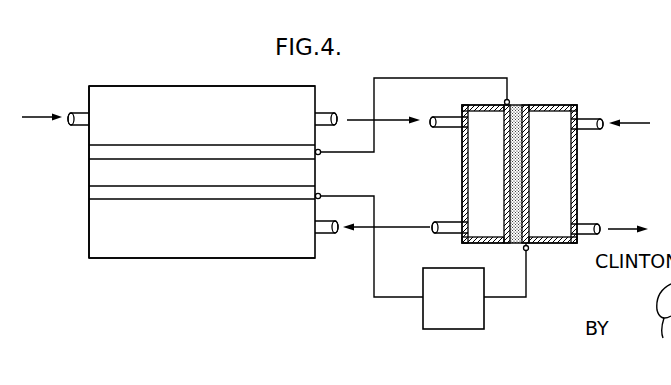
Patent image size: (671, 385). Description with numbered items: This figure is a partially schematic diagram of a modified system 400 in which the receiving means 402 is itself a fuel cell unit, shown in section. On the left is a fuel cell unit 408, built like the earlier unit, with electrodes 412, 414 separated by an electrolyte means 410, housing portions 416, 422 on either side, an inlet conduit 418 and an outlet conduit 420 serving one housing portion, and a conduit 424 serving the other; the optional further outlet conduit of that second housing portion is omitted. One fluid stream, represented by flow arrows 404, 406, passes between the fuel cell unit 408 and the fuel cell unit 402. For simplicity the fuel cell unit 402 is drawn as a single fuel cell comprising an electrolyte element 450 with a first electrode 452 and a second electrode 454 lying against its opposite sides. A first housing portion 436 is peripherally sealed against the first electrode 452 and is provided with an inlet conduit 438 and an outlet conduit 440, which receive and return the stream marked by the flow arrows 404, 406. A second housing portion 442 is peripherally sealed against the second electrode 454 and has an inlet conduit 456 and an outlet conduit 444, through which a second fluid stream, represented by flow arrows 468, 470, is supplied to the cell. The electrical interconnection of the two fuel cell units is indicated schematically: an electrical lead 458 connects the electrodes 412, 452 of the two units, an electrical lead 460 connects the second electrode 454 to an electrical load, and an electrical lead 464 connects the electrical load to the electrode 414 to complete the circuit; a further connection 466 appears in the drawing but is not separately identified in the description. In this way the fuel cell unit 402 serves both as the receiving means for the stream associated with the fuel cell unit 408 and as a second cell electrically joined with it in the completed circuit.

The system 400 is at (250, 65).
The receiving means 402 is at (569, 82).
The flow arrow 404 is at (35, 114).
The flow arrow 406 is at (404, 226).
The fuel cell unit 408 is at (142, 71).
The electrolyte means 410 is at (100, 177).
The electrode 412 is at (186, 148).
The electrode 414 is at (192, 202).
The housing portion 416 is at (197, 92).
The inlet conduit 418 is at (79, 124).
The outlet conduit 420 is at (328, 115).
The housing portion 422 is at (238, 262).
The conduit 424 is at (323, 233).
The first housing portion 436 is at (462, 191).
The inlet conduit 438 is at (447, 126).
The outlet conduit 440 is at (445, 233).
The second housing portion 442 is at (578, 177).
The outlet conduit 444 is at (590, 223).
The electrolyte element 450 is at (517, 174).
The first electrode 452 is at (505, 133).
The second electrode 454 is at (530, 135).
The inlet conduit 456 is at (595, 117).
The electrical lead 458 is at (458, 78).
The electrical lead 460 is at (530, 292).
The electrical lead 464 is at (485, 312).
The control conductor 466 is at (386, 299).
The flow arrow 468 is at (638, 122).
The flow arrow 470 is at (624, 228).